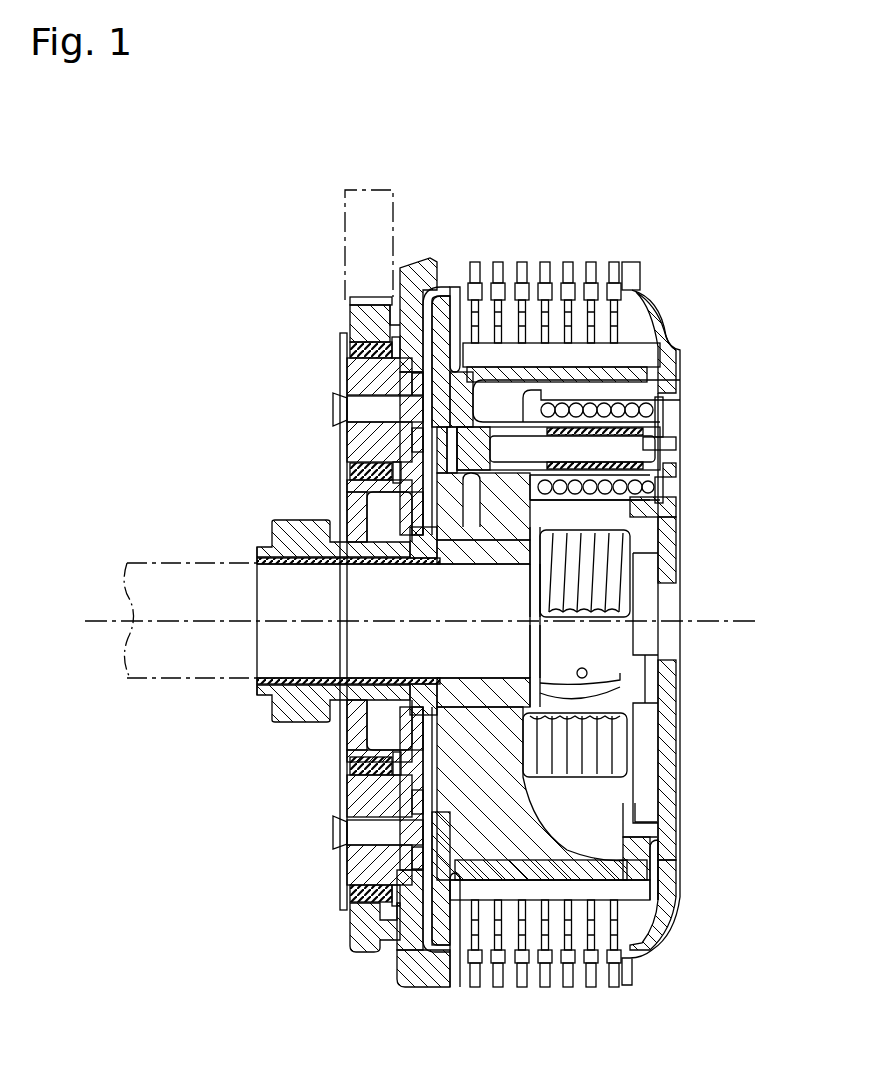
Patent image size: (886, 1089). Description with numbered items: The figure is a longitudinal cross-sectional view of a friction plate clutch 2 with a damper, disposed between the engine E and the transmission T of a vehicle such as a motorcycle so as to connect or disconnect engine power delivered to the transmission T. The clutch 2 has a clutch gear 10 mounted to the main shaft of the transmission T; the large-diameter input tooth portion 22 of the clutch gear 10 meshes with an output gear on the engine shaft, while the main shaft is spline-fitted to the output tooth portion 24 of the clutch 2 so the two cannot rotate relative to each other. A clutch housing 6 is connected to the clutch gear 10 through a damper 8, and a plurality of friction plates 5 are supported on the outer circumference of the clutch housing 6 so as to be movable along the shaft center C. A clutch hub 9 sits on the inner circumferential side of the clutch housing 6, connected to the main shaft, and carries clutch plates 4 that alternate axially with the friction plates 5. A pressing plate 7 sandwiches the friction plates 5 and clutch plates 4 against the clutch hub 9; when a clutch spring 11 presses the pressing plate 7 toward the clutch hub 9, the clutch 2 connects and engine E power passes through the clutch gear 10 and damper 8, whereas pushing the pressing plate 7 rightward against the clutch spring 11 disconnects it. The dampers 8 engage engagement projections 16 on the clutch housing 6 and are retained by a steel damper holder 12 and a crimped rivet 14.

The clutch 2 is at (656, 256).
The clutch plates 4 is at (630, 345).
The friction plates 5 is at (598, 305).
The clutch housing 6 is at (420, 266).
The pressing plate 7 is at (672, 703).
The damper 8 is at (365, 353).
The clutch hub 9 is at (446, 318).
The clutch gear 10 is at (362, 320).
The clutch spring 11 is at (660, 408).
The damper holder 12 is at (345, 440).
The rivet 14 is at (340, 412).
The engagement projections 16 is at (365, 453).
The input tooth portion 22 is at (350, 298).
The output tooth portion 24 is at (500, 668).
The shaft center C is at (722, 619).
The engine E is at (345, 213).
The transmission T is at (162, 680).